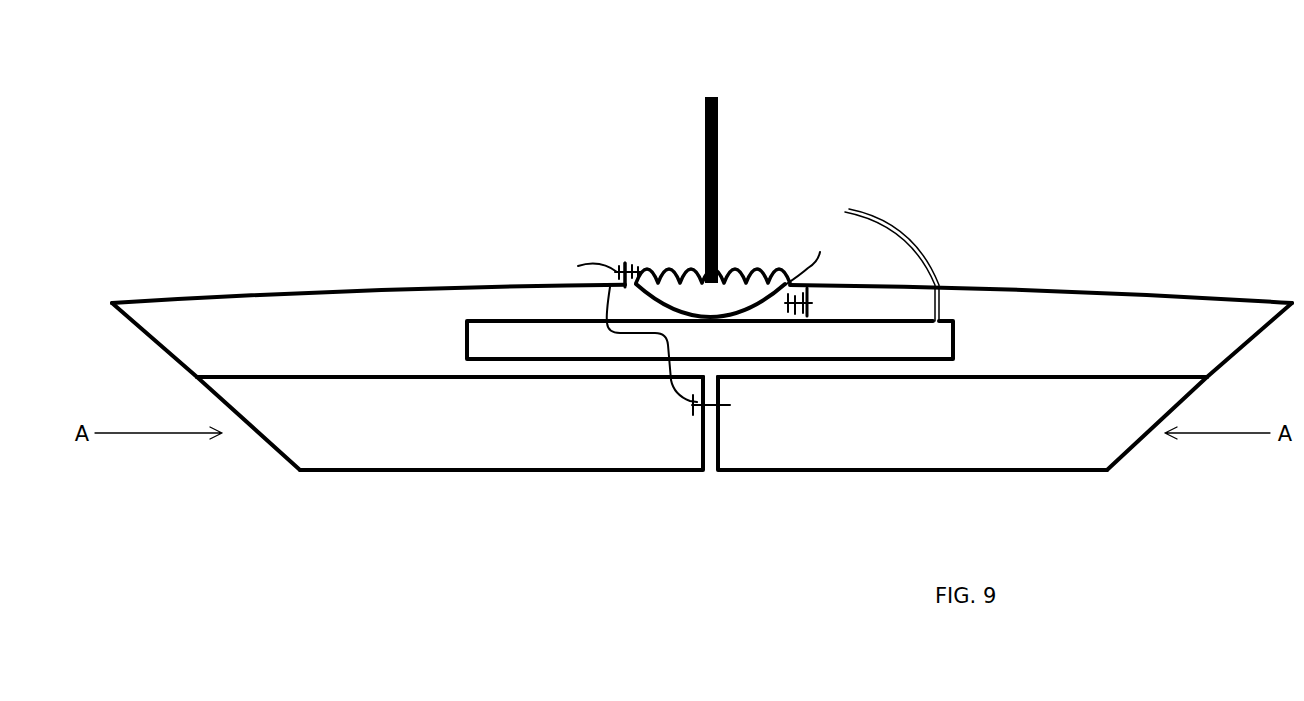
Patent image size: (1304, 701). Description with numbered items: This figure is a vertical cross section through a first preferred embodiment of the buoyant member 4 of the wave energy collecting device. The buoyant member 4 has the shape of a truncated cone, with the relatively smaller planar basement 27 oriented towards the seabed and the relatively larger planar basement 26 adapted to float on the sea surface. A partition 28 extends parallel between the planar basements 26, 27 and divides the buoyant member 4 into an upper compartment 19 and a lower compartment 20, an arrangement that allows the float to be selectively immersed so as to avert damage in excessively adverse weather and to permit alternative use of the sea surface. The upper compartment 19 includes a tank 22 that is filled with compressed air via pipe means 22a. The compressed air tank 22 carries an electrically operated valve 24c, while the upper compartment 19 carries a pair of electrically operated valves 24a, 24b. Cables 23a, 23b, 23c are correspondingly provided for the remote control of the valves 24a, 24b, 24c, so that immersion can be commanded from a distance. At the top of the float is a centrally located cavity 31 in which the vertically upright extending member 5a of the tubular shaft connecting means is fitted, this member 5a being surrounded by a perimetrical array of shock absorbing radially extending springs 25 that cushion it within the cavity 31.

The buoyant member 4 is at (1172, 273).
The vertically upright extending member 5a is at (717, 182).
The upper compartment 19 is at (1106, 340).
The lower compartment 20 is at (393, 395).
The tank 22 is at (542, 322).
The pipe means 22a is at (885, 217).
The cable 23a is at (590, 264).
The cable 23b is at (626, 336).
The cable 23c is at (807, 267).
The electrically operated valve 24a is at (630, 263).
The electrically operated valve 24b is at (712, 407).
The electrically operated valve 24c is at (798, 313).
The shock absorbing radially extending springs 25 is at (660, 275).
The larger planar basement 26 is at (990, 287).
The smaller planar basement 27 is at (863, 470).
The partition 28 is at (425, 377).
The centrally located cavity 31 is at (730, 302).